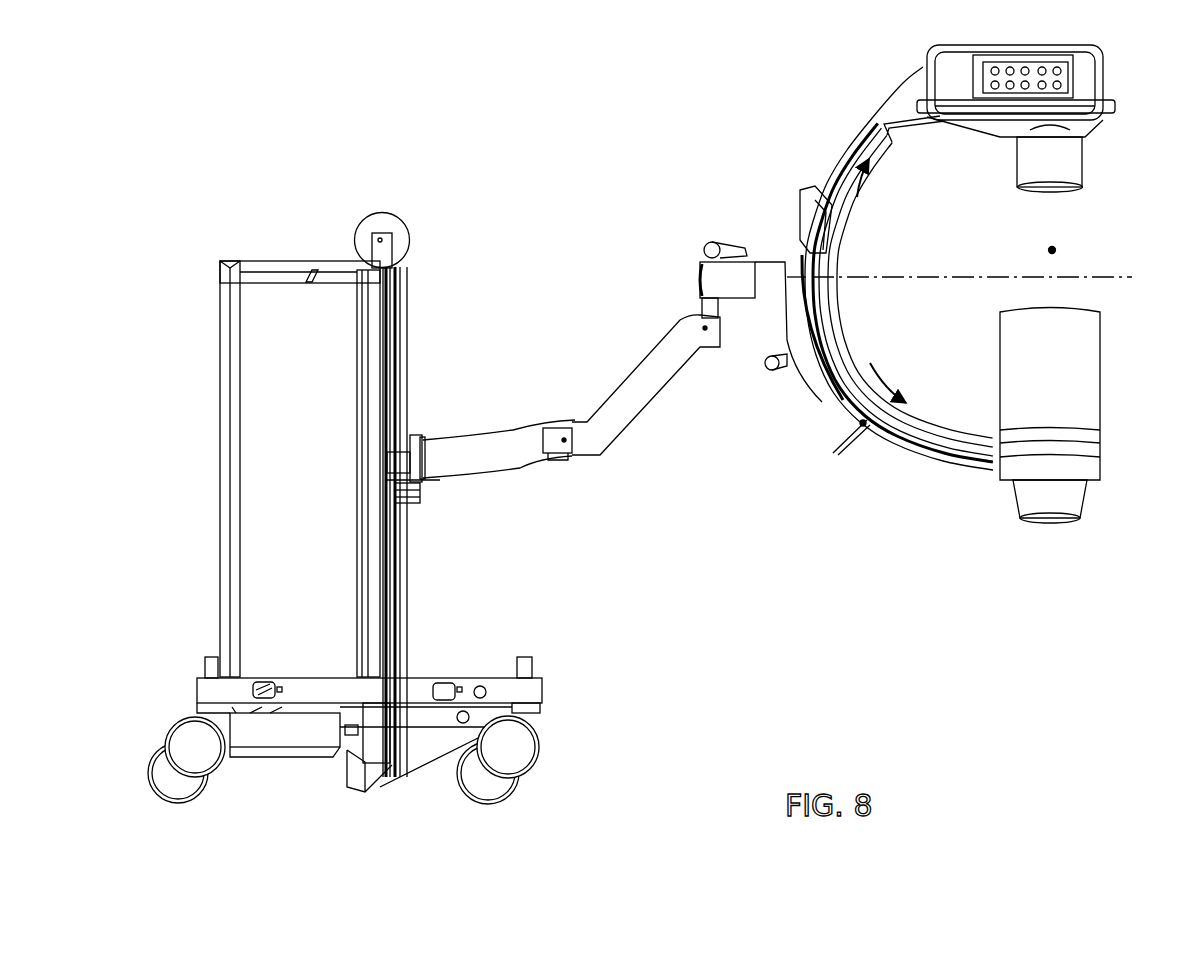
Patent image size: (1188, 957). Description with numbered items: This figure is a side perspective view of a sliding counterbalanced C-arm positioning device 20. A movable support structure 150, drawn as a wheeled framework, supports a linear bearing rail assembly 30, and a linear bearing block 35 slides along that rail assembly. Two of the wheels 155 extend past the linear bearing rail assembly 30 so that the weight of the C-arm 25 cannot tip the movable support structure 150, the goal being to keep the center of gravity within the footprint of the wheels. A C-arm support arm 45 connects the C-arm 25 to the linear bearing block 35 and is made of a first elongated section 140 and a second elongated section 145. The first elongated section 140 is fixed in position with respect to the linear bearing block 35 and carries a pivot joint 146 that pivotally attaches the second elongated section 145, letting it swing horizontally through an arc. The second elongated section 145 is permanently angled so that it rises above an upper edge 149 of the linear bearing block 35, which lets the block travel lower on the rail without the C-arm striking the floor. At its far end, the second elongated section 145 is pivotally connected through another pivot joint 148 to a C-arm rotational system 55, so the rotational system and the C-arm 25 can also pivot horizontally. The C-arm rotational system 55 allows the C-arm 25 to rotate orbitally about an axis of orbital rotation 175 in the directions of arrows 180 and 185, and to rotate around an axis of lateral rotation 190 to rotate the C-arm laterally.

The C-arm positioning device 20 is at (588, 203).
The C-arm 25 is at (846, 108).
The linear bearing rail assembly 30 is at (414, 634).
The linear bearing block 35 is at (422, 426).
The C-arm support arm 45 is at (573, 485).
The C-arm rotational system 55 is at (768, 251).
The first elongated section 140 is at (511, 436).
The second elongated section 145 is at (617, 413).
The pivot joint 146 is at (571, 424).
The pivot joint 148 is at (709, 363).
The upper edge 149 is at (413, 432).
The movable support structure 150 is at (292, 241).
The wheels 155 is at (500, 790).
The axis of orbital rotation 175 is at (1056, 249).
The arrow 180 is at (857, 186).
The arrow 185 is at (890, 367).
The axis of lateral rotation 190 is at (1110, 276).